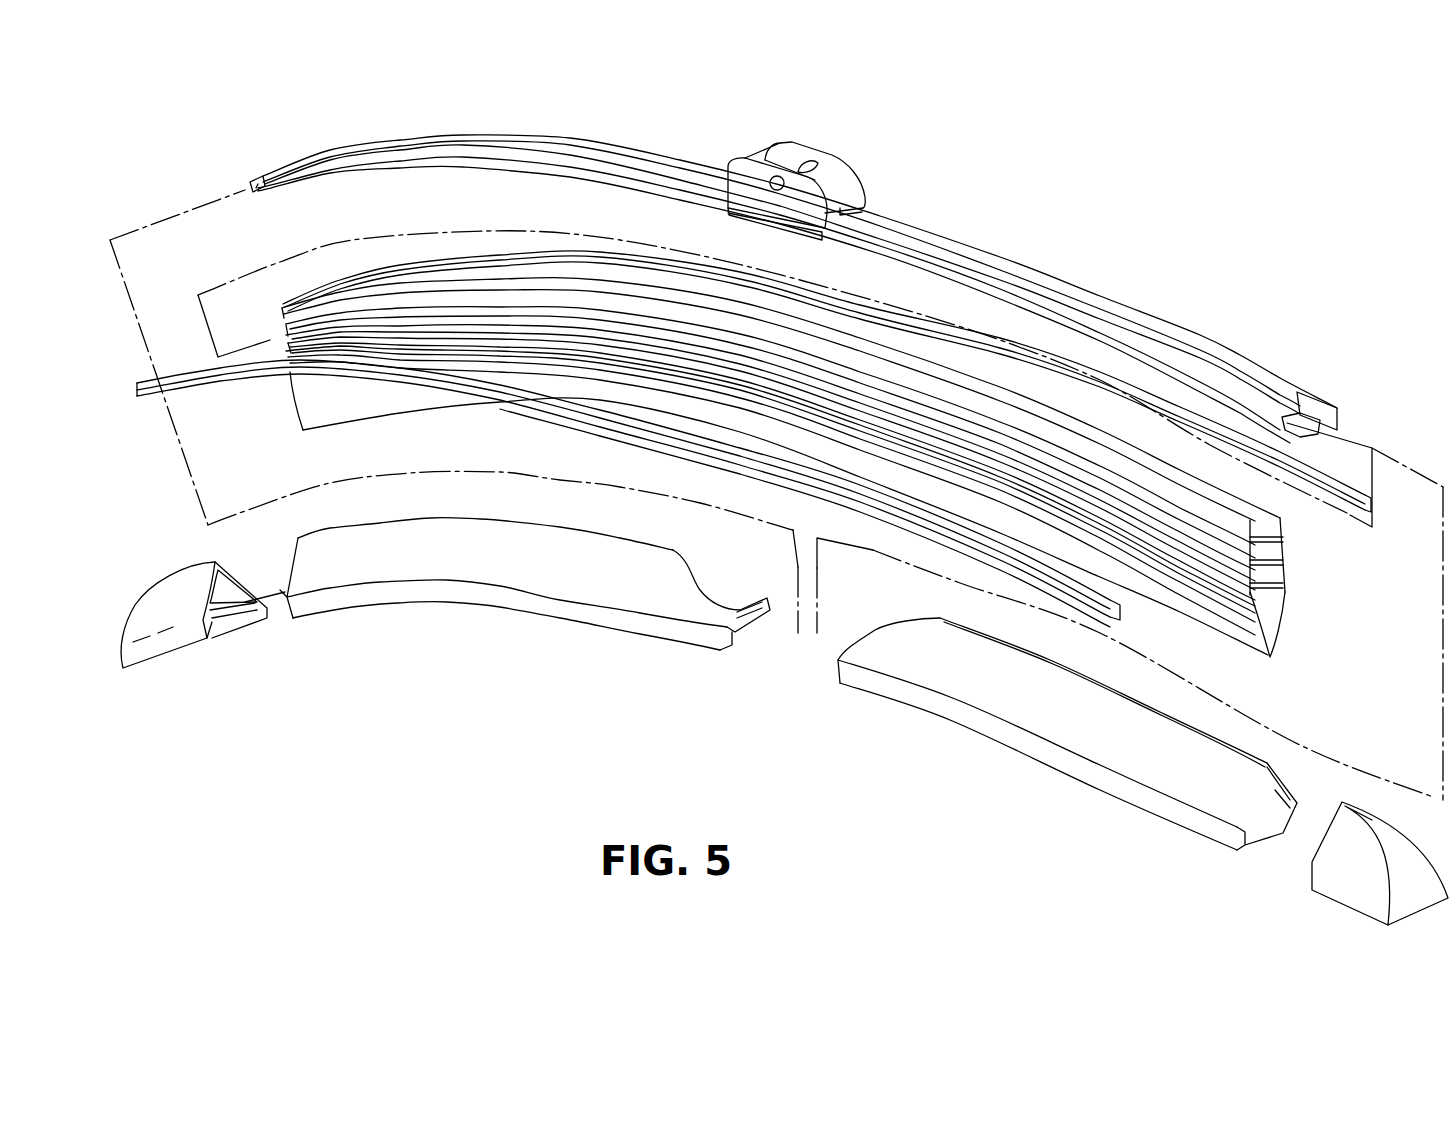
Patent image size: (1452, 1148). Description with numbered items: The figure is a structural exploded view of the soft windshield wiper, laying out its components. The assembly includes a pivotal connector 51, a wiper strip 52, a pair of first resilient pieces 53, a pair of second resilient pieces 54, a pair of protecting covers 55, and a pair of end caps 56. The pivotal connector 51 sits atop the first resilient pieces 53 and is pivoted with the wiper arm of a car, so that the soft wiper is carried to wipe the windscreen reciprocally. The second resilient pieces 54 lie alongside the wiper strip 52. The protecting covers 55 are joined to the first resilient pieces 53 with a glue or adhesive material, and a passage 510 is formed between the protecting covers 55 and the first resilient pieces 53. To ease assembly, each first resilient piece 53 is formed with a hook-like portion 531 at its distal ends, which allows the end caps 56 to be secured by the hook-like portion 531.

The pivotal connector 51 is at (829, 165).
The passage 510 is at (866, 188).
The wiper strip 52 is at (1288, 598).
The first resilient pieces 53 is at (955, 268).
The hook-like portion 531 is at (1336, 403).
The second resilient pieces 54 is at (1100, 388).
The protecting covers 55 is at (503, 602).
The end caps 56 is at (175, 645).